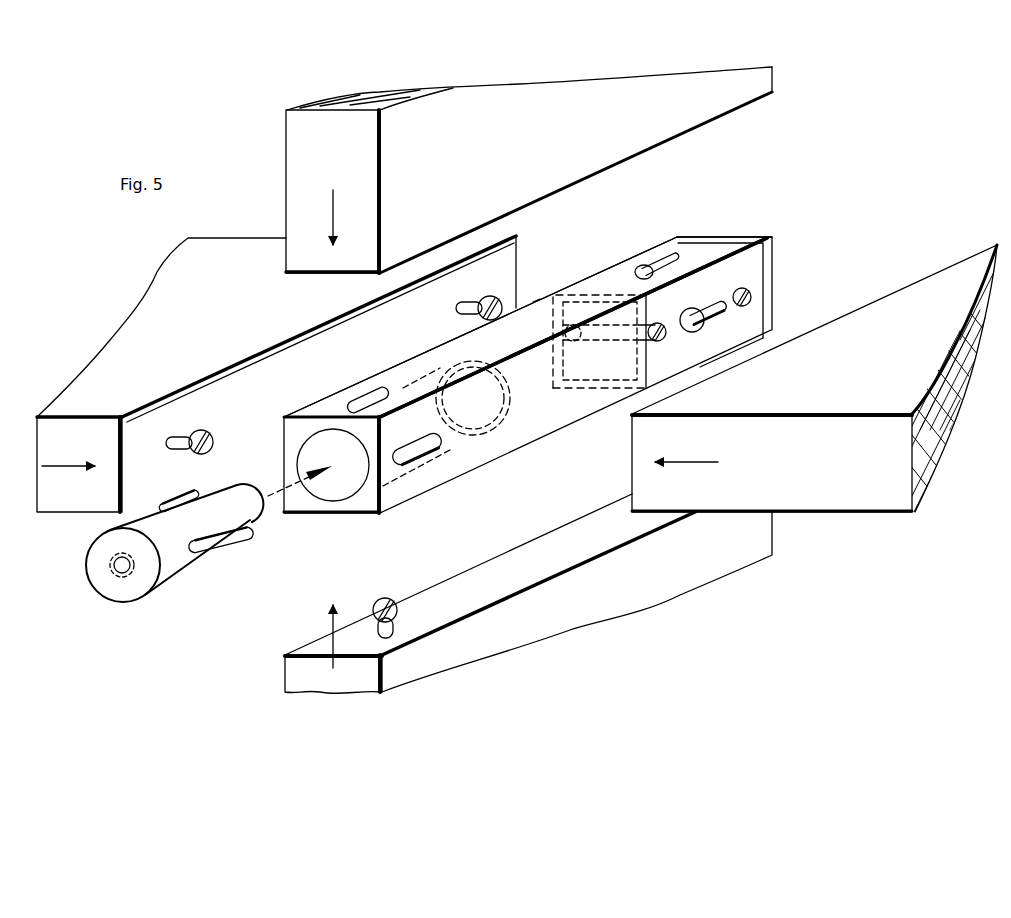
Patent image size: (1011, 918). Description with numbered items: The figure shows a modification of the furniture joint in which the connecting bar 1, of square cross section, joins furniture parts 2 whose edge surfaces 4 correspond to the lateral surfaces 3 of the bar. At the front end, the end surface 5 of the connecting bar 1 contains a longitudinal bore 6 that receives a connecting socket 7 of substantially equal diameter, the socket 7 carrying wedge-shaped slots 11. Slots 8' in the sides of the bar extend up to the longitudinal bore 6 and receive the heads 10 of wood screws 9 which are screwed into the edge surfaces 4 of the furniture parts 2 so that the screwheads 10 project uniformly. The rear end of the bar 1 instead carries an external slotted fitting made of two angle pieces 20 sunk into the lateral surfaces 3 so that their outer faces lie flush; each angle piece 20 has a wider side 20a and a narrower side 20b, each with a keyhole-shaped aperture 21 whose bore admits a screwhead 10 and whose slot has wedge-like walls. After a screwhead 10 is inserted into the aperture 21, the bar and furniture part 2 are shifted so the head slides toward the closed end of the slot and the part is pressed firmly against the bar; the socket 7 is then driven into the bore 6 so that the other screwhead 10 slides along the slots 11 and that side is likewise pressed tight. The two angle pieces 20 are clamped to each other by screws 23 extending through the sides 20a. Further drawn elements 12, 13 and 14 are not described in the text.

The connecting bar 1 is at (556, 371).
The furniture parts 2 is at (556, 90).
The lateral surfaces 3 is at (533, 308).
The edge surfaces 4 is at (315, 340).
The end surfaces 5 is at (332, 489).
The longitudinal bores 6 is at (326, 488).
The socket 7 is at (178, 590).
The slots 8' is at (395, 457).
The wood screws 9 is at (176, 447).
The screw heads 10 is at (203, 431).
The slots of the socket 11 is at (232, 542).
The locking pin 12 is at (188, 556).
The pin bore 13 is at (114, 565).
The cover block 14 is at (512, 412).
The angle pieces 20 is at (592, 270).
The side of angle piece 20a is at (773, 260).
The side of angle piece 20b is at (698, 245).
The keyhole-shaped aperture 21 is at (638, 268).
The screws 23 is at (753, 297).